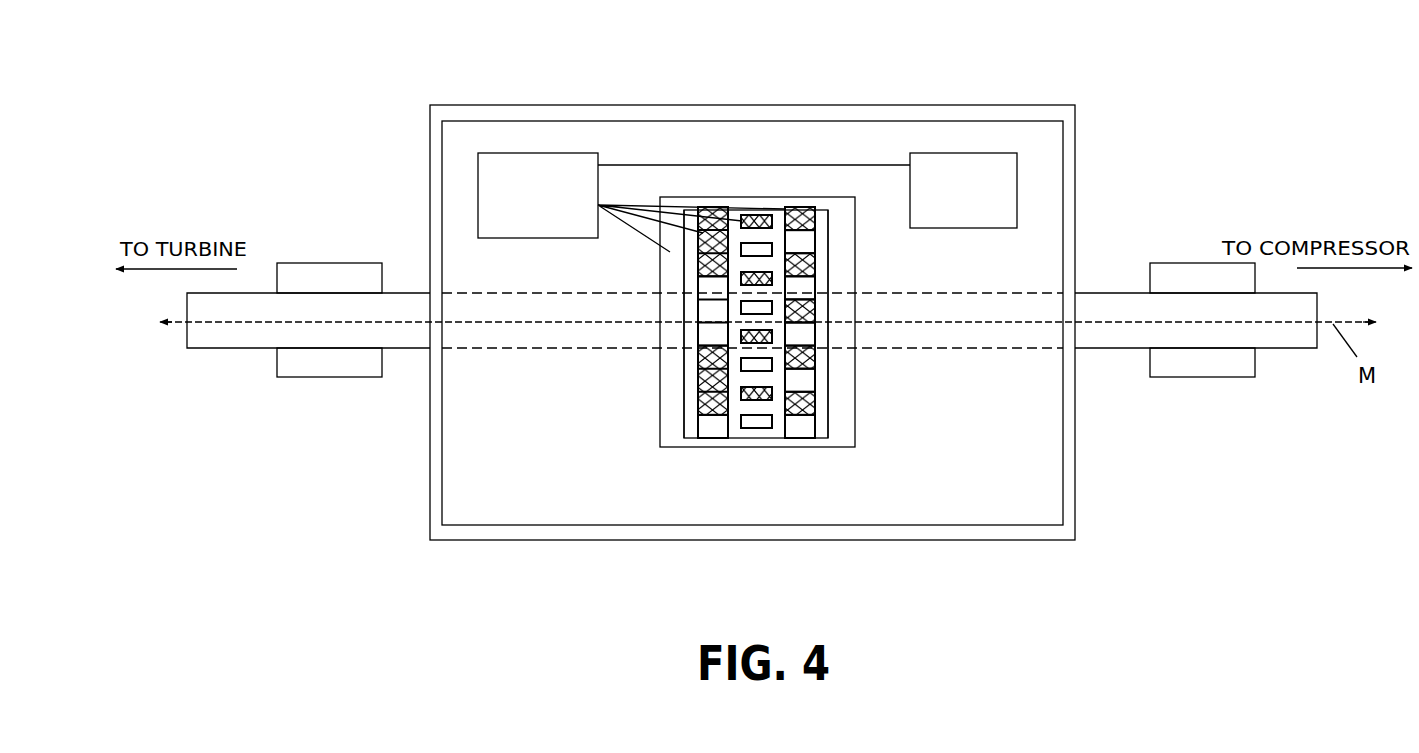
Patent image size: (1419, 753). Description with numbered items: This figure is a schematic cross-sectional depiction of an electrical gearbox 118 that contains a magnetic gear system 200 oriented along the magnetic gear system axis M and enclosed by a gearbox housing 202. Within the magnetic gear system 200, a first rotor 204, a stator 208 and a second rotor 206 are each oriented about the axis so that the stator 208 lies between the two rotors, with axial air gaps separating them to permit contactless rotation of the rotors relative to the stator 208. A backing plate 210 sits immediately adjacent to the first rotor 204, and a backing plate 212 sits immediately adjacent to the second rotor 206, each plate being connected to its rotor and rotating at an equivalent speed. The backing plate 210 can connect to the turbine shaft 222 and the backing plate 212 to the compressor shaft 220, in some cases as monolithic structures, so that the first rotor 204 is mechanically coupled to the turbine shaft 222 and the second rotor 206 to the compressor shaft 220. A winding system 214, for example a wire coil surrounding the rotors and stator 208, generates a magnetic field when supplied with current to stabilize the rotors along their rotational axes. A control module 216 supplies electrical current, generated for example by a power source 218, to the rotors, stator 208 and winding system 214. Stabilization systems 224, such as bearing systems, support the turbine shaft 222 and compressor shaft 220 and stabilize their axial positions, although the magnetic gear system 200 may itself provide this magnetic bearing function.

The electrical gearbox 118 is at (752, 289).
The magnetic gear system 200 is at (729, 352).
The gearbox housing 202 is at (620, 105).
The first rotor 204 is at (702, 441).
The second rotor 206 is at (804, 441).
The stator 208 is at (764, 433).
The backing plate 210 is at (692, 430).
The backing plate 212 is at (823, 423).
The winding system 214 is at (855, 418).
The control module 216 is at (557, 238).
The power source 218 is at (947, 228).
The compressor shaft 220 is at (1087, 350).
The turbine shaft 222 is at (415, 350).
The stabilization systems 224 is at (315, 378).